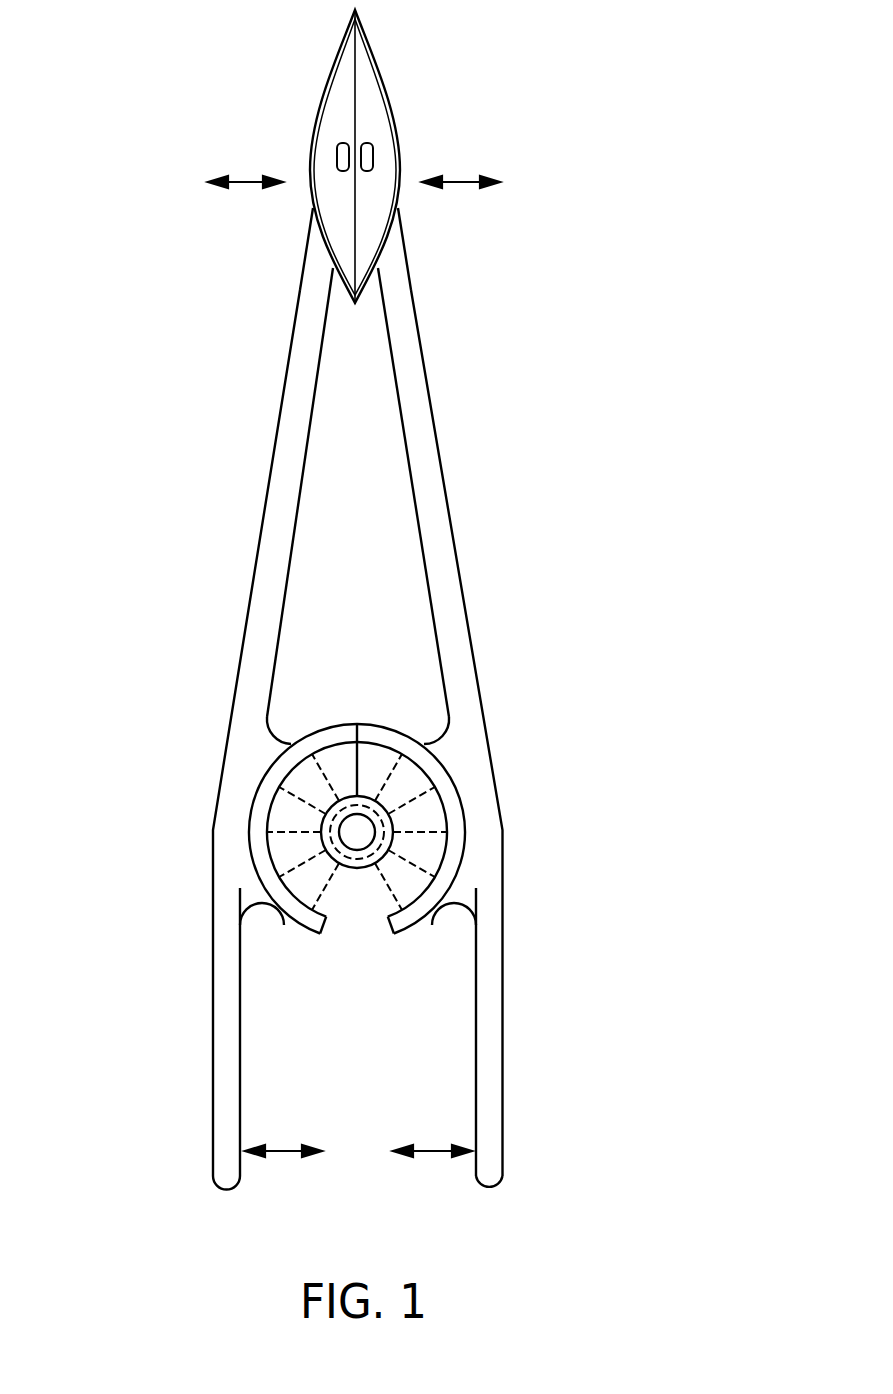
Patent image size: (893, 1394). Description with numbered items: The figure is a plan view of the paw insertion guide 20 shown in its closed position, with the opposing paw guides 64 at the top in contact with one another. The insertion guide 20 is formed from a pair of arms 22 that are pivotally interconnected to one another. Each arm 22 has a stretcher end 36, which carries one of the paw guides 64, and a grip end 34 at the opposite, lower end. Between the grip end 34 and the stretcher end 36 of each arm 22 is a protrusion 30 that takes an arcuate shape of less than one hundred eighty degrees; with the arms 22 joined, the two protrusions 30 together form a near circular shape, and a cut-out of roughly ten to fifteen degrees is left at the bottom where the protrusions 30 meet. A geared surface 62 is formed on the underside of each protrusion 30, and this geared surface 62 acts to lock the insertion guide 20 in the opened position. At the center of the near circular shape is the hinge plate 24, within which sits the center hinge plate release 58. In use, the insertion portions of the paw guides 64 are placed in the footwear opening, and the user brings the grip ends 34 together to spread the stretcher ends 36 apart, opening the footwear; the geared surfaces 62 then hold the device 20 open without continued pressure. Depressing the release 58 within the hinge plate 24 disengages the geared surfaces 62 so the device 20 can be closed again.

The paw insertion guide 20 is at (286, 617).
The arm 22 is at (268, 551).
The hinge plate 24 is at (403, 822).
The protrusion 30 is at (300, 917).
The grip end 34 is at (222, 1179).
The stretcher end 36 is at (308, 231).
The center hinge plate release 58 is at (326, 840).
The geared surface 62 is at (316, 773).
The paw guide 64 is at (402, 137).